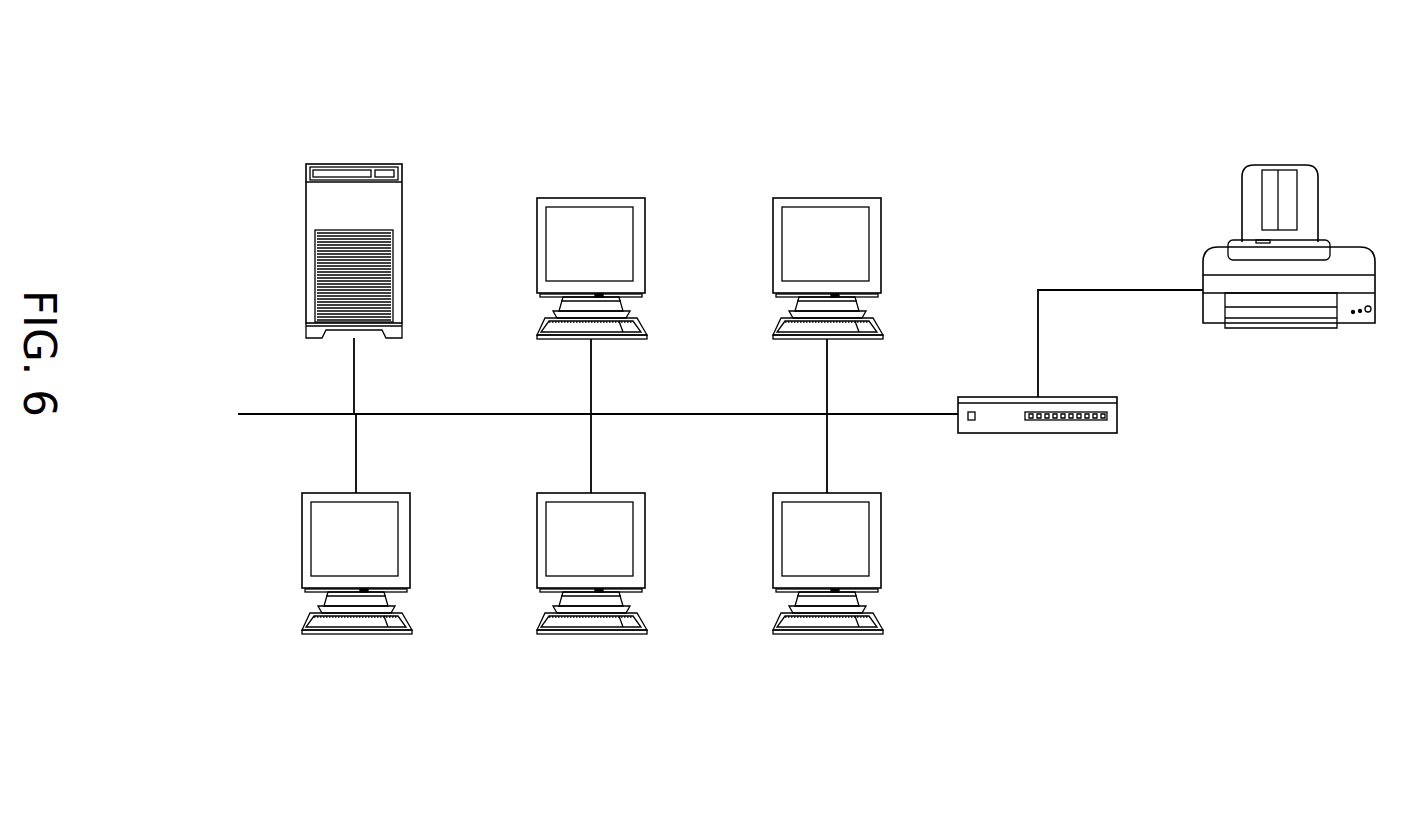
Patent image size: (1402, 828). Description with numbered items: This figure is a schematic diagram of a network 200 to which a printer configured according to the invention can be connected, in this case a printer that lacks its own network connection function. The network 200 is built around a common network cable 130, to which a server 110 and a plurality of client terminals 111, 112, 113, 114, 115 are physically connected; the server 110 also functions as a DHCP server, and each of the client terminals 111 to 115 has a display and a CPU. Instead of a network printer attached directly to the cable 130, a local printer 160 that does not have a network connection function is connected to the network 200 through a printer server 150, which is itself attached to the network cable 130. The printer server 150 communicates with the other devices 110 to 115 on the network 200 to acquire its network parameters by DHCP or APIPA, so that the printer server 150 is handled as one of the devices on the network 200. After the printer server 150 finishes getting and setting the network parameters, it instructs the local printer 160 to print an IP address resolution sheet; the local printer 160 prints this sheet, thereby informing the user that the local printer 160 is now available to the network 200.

The network 200 is at (785, 126).
The server 110 is at (403, 186).
The client terminal 111 is at (646, 205).
The client terminal 112 is at (882, 205).
The client terminal 113 is at (330, 634).
The client terminal 114 is at (572, 634).
The client terminal 115 is at (805, 634).
The network cable 130 is at (257, 416).
The printer server 150 is at (1015, 433).
The local printer 160 is at (1208, 247).